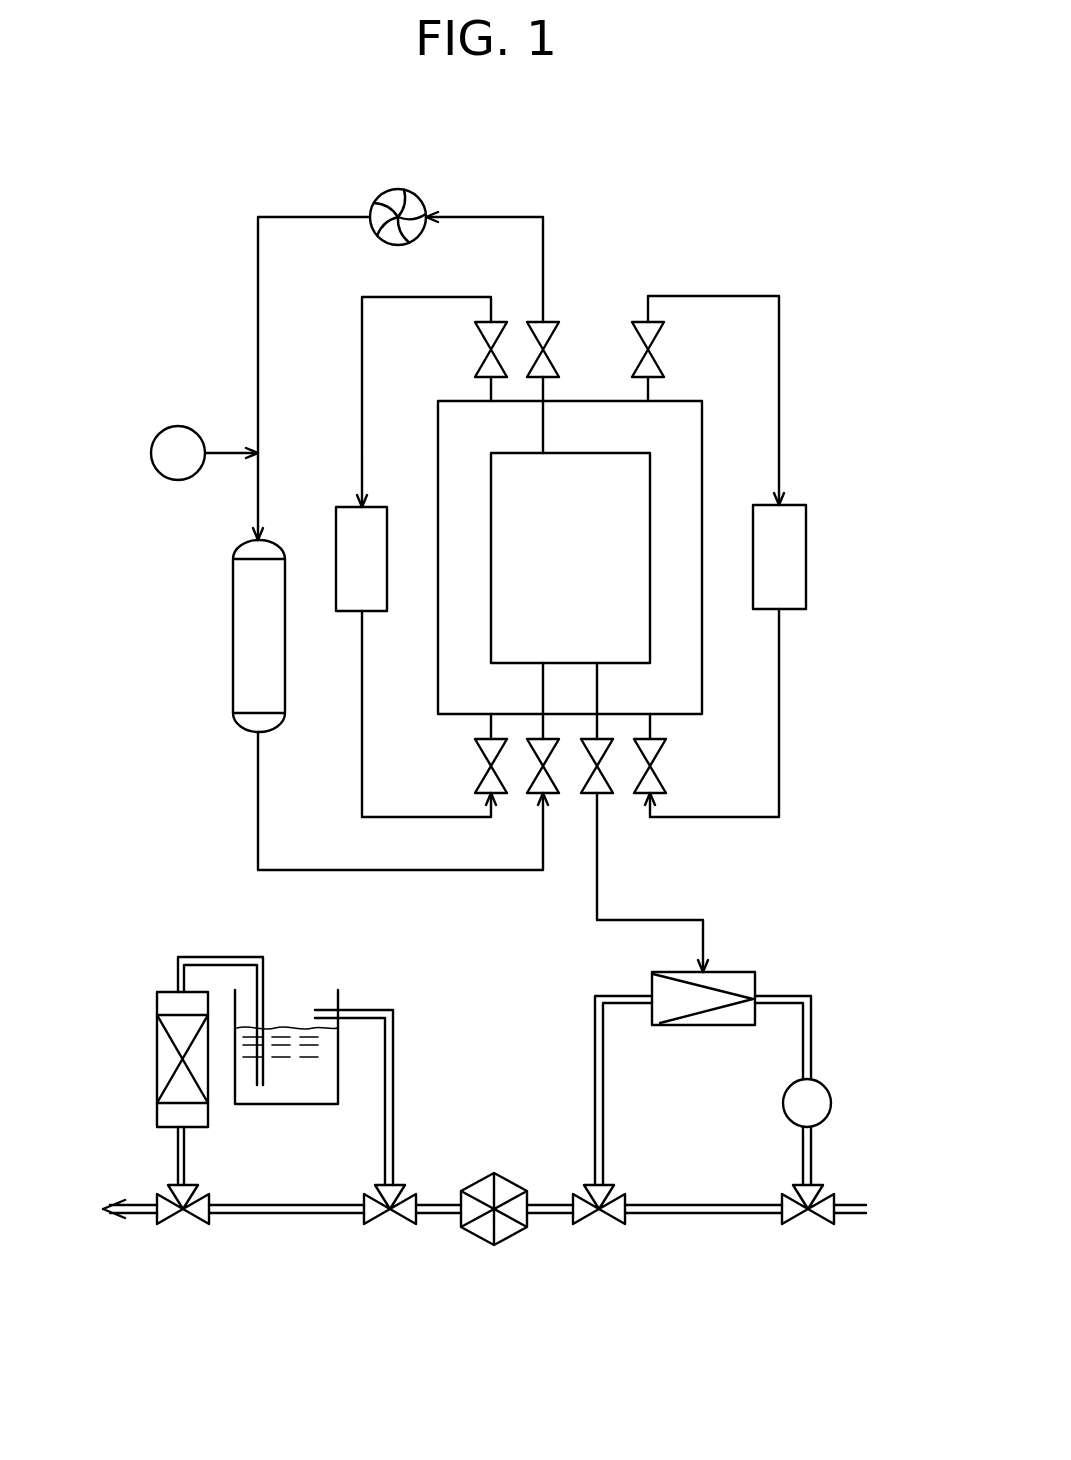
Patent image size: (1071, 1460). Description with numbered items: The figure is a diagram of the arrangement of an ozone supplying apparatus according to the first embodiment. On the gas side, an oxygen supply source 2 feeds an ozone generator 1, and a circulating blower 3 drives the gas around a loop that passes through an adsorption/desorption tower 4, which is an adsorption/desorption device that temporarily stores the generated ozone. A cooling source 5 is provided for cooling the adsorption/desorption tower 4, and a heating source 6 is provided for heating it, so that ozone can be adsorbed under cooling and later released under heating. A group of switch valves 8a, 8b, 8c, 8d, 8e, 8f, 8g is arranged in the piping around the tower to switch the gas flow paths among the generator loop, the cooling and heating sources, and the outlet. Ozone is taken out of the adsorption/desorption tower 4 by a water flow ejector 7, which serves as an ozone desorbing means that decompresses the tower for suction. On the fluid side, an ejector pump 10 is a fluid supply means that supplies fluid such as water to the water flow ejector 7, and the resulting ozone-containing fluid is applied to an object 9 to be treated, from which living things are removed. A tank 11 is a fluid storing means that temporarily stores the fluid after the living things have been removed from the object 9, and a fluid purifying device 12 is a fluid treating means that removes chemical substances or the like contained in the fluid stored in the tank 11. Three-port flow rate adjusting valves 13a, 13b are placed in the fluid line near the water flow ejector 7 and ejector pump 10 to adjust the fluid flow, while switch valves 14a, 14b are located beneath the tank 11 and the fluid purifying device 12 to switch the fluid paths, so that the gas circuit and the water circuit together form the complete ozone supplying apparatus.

The ozone generator 1 is at (250, 652).
The oxygen supply source 2 is at (172, 442).
The circulating blower 3 is at (388, 197).
The adsorption/desorption tower 4 is at (703, 450).
The cooling source 5 is at (350, 532).
The heating source 6 is at (795, 568).
The water flow ejector 7 is at (735, 980).
The switch valve 8a is at (493, 328).
The switch valve 8b is at (490, 783).
The switch valve 8c is at (547, 328).
The switch valve 8d is at (543, 783).
The switch valve 8e is at (648, 328).
The switch valve 8f is at (600, 783).
The switch valve 8g is at (652, 783).
The object to be treated 9 is at (498, 1188).
The ejector pump 10 is at (827, 1102).
The tank 11 is at (320, 1050).
The fluid purifying device 12 is at (162, 1053).
The three-port flow rate adjusting valve 13a is at (823, 1216).
The three-port flow rate adjusting valve 13b is at (612, 1216).
The switch valve 14a is at (405, 1212).
The switch valve 14b is at (200, 1212).